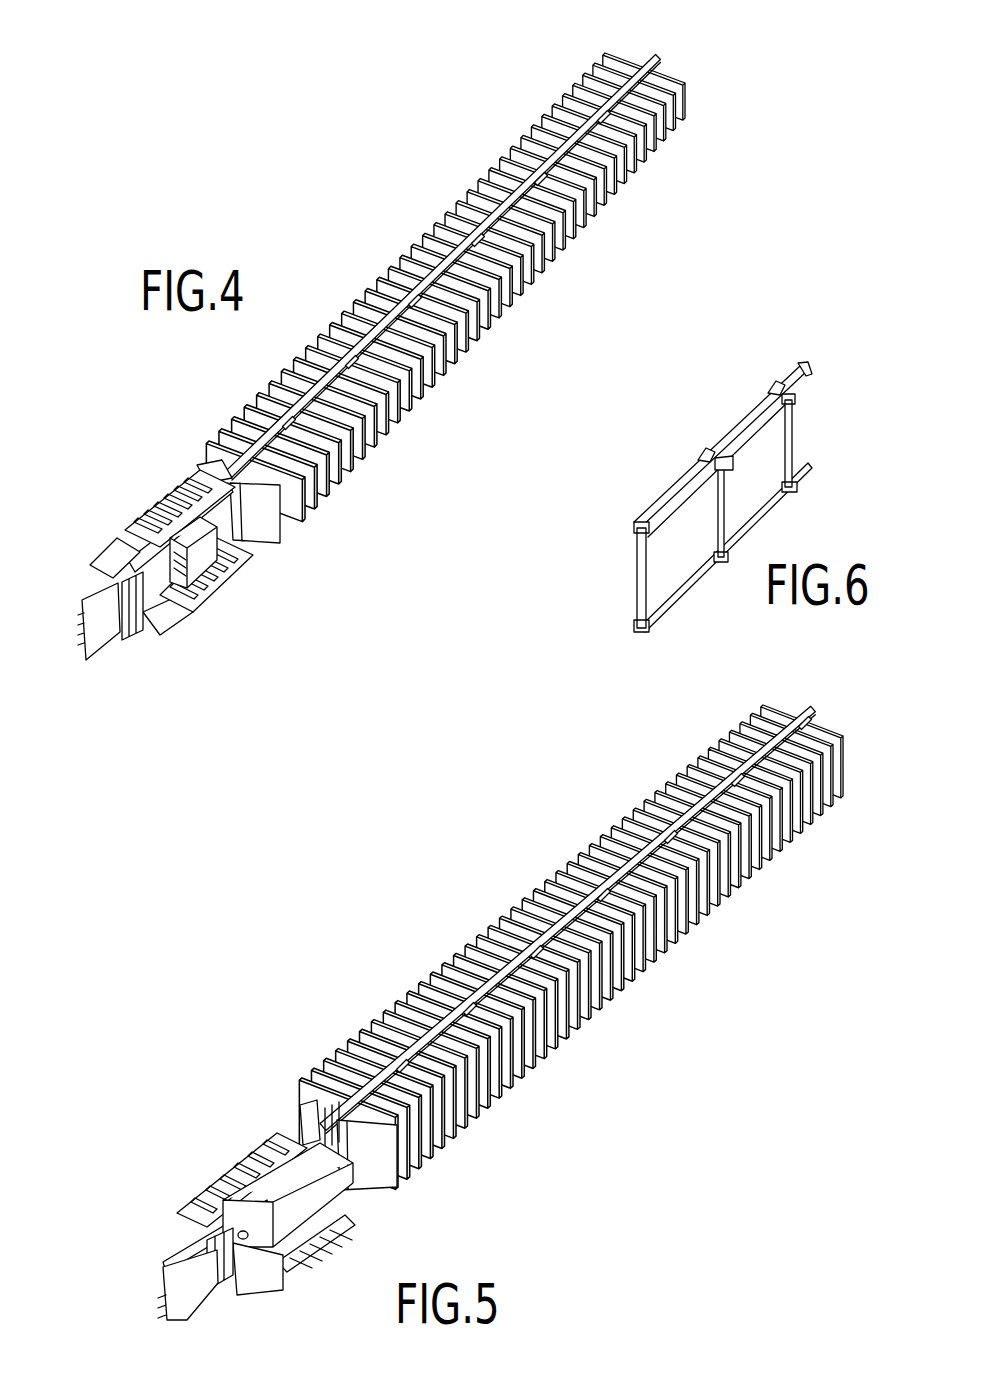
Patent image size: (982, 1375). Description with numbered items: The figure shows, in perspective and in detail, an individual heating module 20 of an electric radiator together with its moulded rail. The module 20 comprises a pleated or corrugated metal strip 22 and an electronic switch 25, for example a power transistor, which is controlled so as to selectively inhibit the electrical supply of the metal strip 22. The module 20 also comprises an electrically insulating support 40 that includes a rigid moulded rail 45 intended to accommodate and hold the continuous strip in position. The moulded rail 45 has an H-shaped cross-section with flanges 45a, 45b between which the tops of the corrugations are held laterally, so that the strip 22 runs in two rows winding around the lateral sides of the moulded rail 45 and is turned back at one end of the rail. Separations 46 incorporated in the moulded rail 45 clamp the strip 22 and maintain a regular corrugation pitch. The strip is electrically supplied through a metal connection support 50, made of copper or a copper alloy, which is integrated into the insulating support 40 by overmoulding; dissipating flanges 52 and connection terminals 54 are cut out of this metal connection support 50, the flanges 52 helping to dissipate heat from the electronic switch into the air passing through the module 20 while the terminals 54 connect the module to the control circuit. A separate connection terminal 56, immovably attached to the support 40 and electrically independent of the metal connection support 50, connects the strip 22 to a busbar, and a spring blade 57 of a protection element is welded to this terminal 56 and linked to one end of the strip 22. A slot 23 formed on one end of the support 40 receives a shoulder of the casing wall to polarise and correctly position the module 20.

In FIG. 4, the individual heating module 20 is at (468, 276).
In FIG. 5, the individual heating module 20 is at (571, 947).
In FIG. 4, the metal strip 22 is at (513, 304).
In FIG. 5, the metal strip 22 is at (622, 988).
In FIG. 4, the electrically insulating support 40 is at (681, 45).
In FIG. 5, the electrically insulating support 40 is at (477, 895).
In FIG. 6, the moulded rail 45 is at (693, 517).
In FIG. 6, the flange 45a is at (633, 530).
In FIG. 6, the flange 45b is at (642, 630).
In FIG. 6, the separations 46 is at (805, 378).
In FIG. 4, the metal connection support 50 is at (153, 596).
In FIG. 4, the dissipating flanges 52 is at (163, 486).
In FIG. 4, the connection terminals 54 is at (80, 630).
In FIG. 5, the connection terminals 54 is at (160, 1300).
In FIG. 4, the connection terminal 56 is at (112, 547).
In FIG. 5, the connection terminal 56 is at (264, 1282).
In FIG. 4, the slot 23 is at (115, 578).
In FIG. 5, the slot 23 is at (230, 1296).
In FIG. 4, the electronic switch 25 is at (204, 552).
In FIG. 5, the spring blade 57 is at (307, 1197).